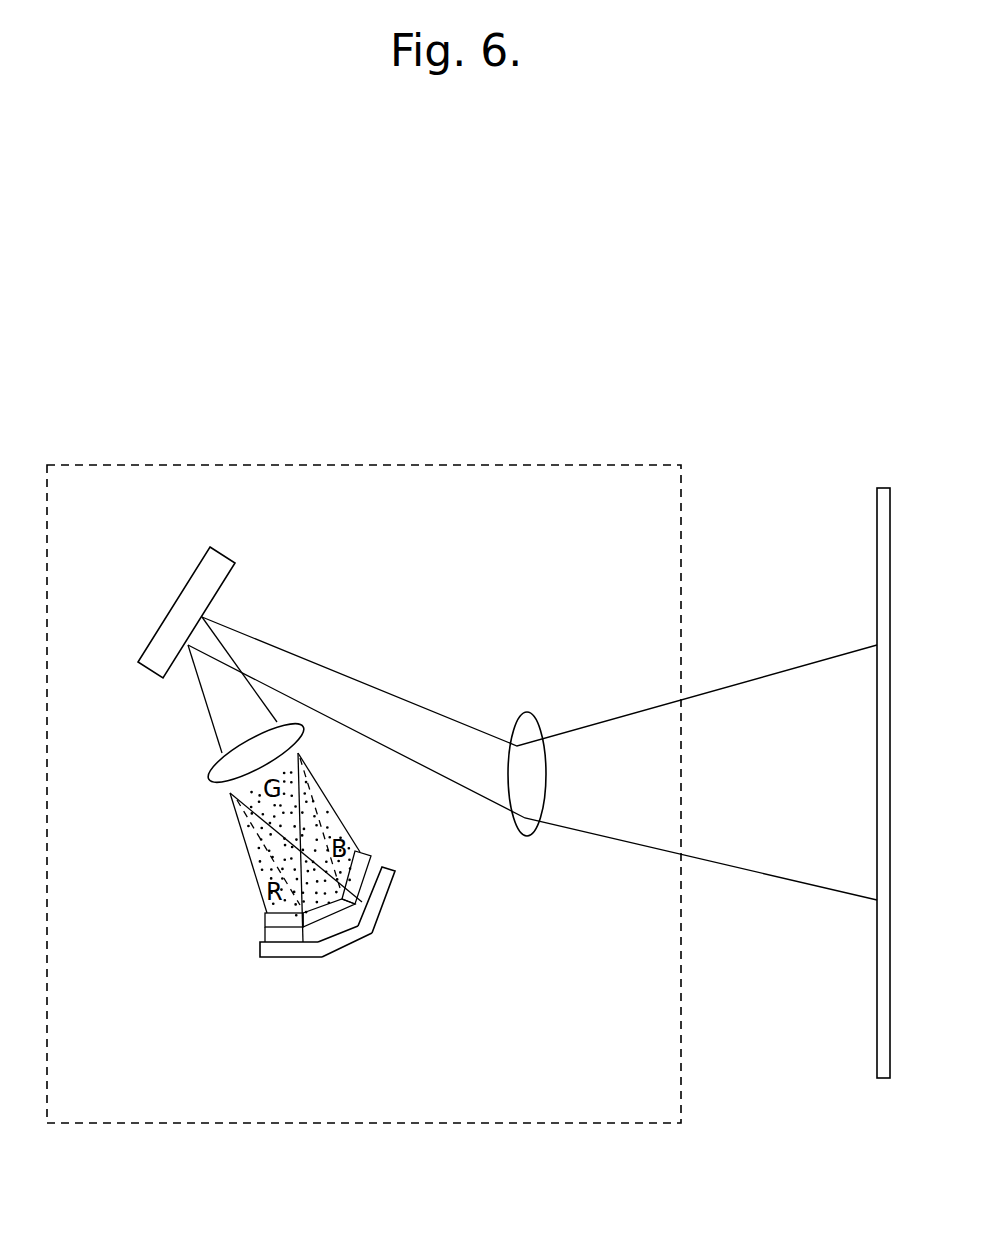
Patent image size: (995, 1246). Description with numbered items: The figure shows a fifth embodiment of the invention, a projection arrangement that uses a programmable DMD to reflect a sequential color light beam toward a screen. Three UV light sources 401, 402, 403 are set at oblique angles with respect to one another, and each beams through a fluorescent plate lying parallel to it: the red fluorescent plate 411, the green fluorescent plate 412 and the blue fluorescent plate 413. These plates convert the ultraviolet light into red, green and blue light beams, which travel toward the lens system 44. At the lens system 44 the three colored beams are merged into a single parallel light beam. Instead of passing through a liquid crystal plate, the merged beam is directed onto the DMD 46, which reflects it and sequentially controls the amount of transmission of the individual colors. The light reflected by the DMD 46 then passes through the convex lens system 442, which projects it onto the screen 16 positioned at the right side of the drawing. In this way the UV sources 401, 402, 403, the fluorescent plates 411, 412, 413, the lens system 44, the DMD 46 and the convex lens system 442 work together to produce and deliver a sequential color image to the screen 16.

The screen 16 is at (872, 557).
The DMD 46 is at (203, 582).
The lens system 44 is at (205, 772).
The convex lens system 442 is at (515, 703).
The UV light source 401 is at (285, 962).
The UV light source 402 is at (353, 958).
The UV light source 403 is at (400, 907).
The red fluorescent plate 411 is at (265, 917).
The green fluorescent plate 412 is at (285, 877).
The blue fluorescent plate 413 is at (358, 850).